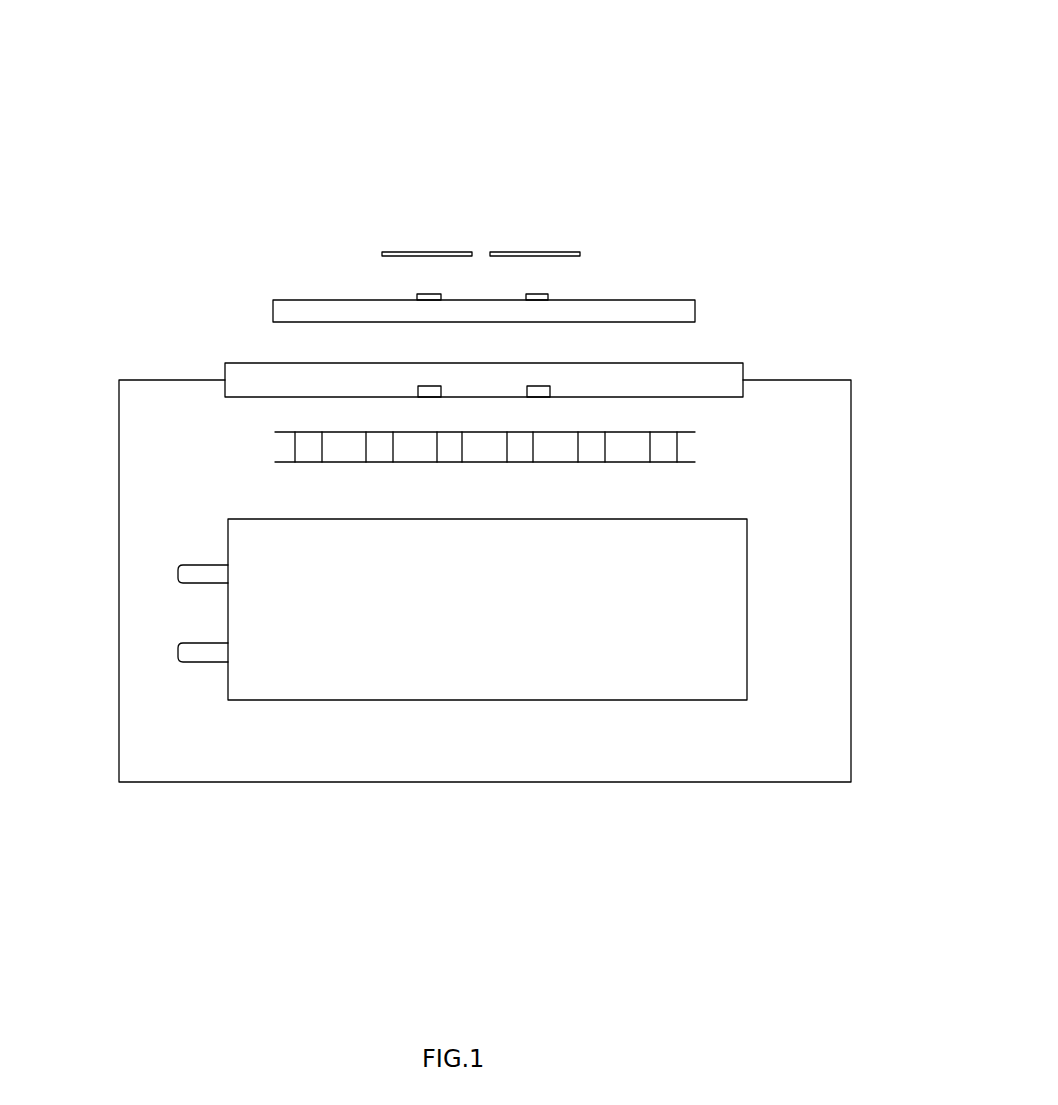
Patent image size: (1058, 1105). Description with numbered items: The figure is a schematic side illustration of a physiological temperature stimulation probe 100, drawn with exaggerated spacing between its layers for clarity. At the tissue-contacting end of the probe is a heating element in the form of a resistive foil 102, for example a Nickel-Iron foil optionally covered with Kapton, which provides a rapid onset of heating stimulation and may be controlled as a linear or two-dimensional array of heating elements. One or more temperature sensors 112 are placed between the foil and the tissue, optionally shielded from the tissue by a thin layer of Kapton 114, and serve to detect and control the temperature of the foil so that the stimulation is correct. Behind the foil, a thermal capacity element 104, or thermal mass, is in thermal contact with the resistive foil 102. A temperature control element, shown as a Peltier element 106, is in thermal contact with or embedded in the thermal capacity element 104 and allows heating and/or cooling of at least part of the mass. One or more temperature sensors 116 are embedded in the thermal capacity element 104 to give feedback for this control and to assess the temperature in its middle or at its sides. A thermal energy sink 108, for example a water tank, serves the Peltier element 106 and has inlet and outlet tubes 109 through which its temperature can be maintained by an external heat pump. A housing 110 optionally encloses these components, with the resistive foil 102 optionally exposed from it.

The physiological temperature stimulation probe 100 is at (228, 81).
The resistive foil 102 is at (697, 312).
The thermal capacity element 104 is at (728, 363).
The Peltier element 106 is at (683, 433).
The thermal energy sink 108 is at (748, 598).
The inlet and outlet tubes 109 is at (197, 585).
The housing 110 is at (852, 672).
The temperature sensors 112 is at (437, 294).
The thin layer of Kapton 114 is at (442, 252).
The temperature sensors 116 is at (540, 386).